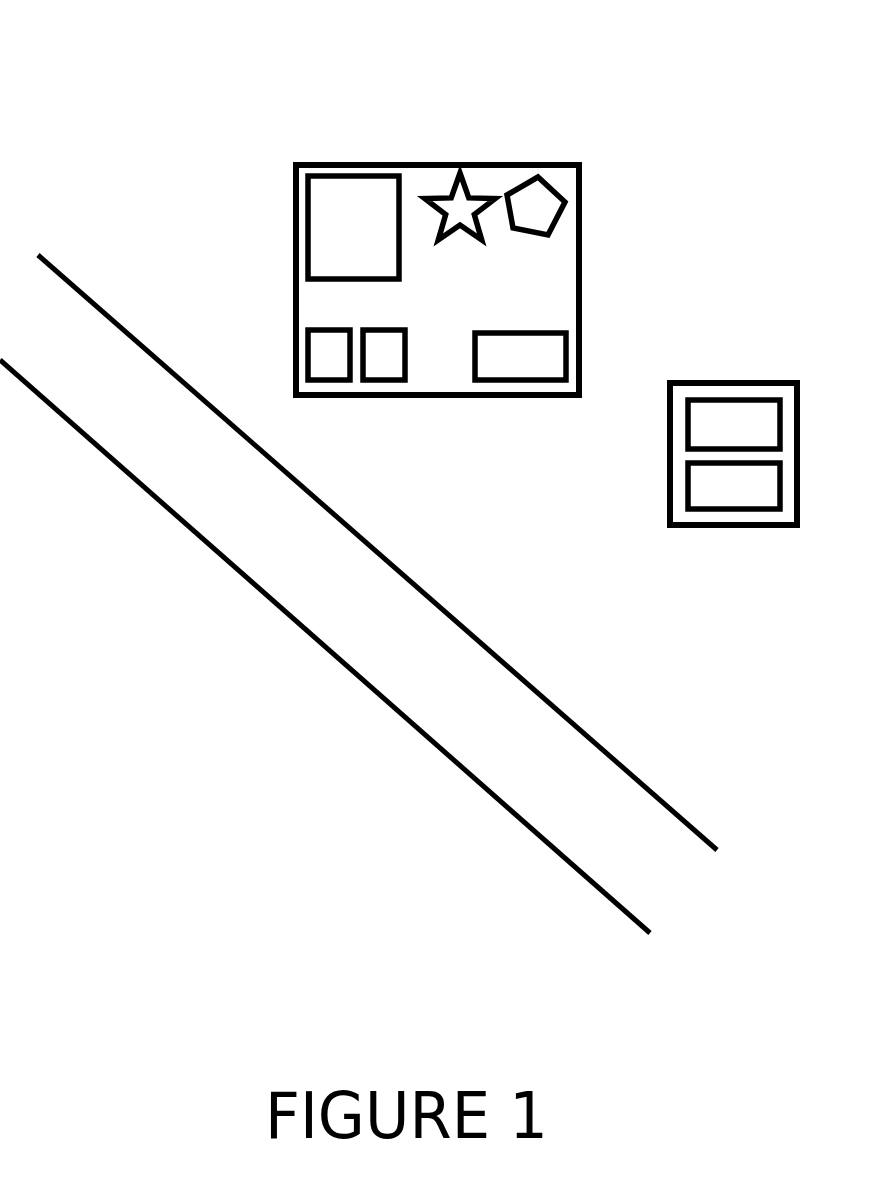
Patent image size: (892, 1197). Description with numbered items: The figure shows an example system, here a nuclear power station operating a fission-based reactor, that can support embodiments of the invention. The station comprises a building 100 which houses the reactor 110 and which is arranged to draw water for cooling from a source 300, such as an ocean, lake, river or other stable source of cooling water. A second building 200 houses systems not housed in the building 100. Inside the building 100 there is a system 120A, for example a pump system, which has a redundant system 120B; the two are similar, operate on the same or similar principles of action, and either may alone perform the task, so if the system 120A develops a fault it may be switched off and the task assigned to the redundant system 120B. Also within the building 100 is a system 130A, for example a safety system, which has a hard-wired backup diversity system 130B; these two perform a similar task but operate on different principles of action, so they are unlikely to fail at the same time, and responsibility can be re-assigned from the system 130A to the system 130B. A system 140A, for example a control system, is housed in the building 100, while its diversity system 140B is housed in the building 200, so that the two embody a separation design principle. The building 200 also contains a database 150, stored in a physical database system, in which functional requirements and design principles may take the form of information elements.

The building 100 is at (423, 162).
The reactor 110 is at (353, 227).
The system 120A is at (325, 383).
The redundant system 120B is at (387, 383).
The system 130A is at (471, 192).
The hard-wired backup diversity system 130B is at (547, 190).
The system 140A is at (520, 356).
The diversity system 140B is at (734, 424).
The database 150 is at (734, 486).
The building 200 is at (736, 380).
The source 300 is at (358, 594).